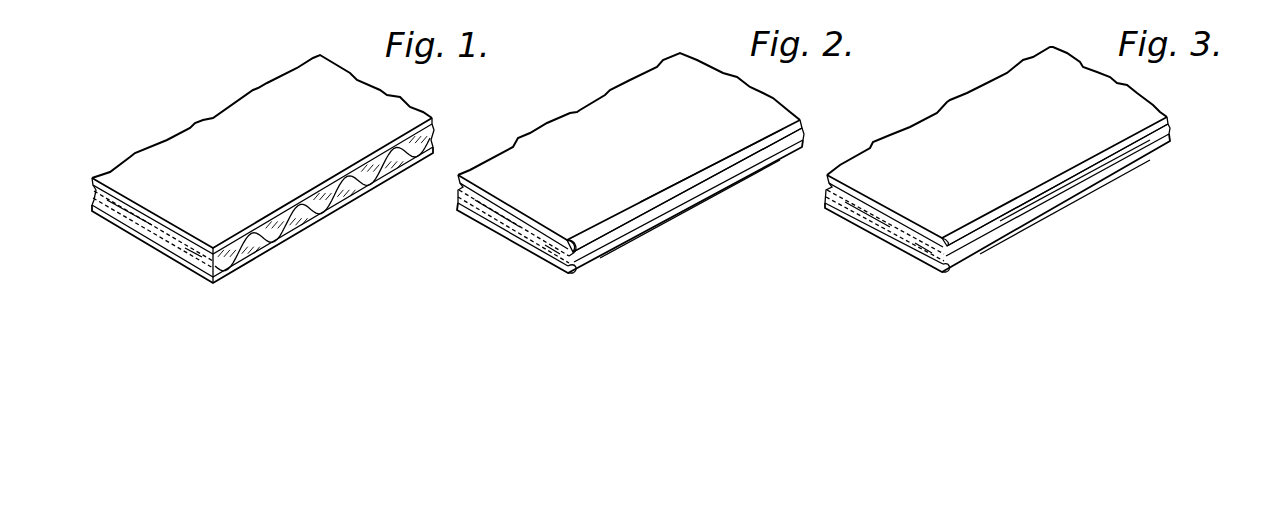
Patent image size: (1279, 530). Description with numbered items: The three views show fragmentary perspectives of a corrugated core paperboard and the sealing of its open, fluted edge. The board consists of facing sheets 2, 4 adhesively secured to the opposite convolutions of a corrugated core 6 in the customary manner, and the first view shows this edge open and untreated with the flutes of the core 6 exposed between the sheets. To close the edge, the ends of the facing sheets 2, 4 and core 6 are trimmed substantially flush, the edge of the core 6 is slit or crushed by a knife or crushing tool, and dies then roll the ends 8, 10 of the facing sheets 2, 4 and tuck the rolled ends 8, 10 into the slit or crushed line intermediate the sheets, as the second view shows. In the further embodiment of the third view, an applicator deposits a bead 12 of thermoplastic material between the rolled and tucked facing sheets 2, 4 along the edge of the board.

In FIG. 1, the facing sheet 2 is at (208, 120).
In FIG. 2, the facing sheet 2 is at (577, 117).
In FIG. 3, the facing sheet 2 is at (943, 115).
In FIG. 1, the facing sheet 4 is at (293, 235).
In FIG. 2, the facing sheet 4 is at (518, 245).
In FIG. 3, the facing sheet 4 is at (867, 232).
In FIG. 1, the corrugated core 6 is at (333, 203).
In FIG. 2, the corrugated core 6 is at (474, 222).
In FIG. 3, the corrugated core 6 is at (837, 207).
In FIG. 2, the rolled end of facing sheet 8 is at (565, 240).
In FIG. 2, the rolled end of facing sheet 10 is at (568, 270).
In FIG. 3, the bead of thermoplastic material 12 is at (948, 257).